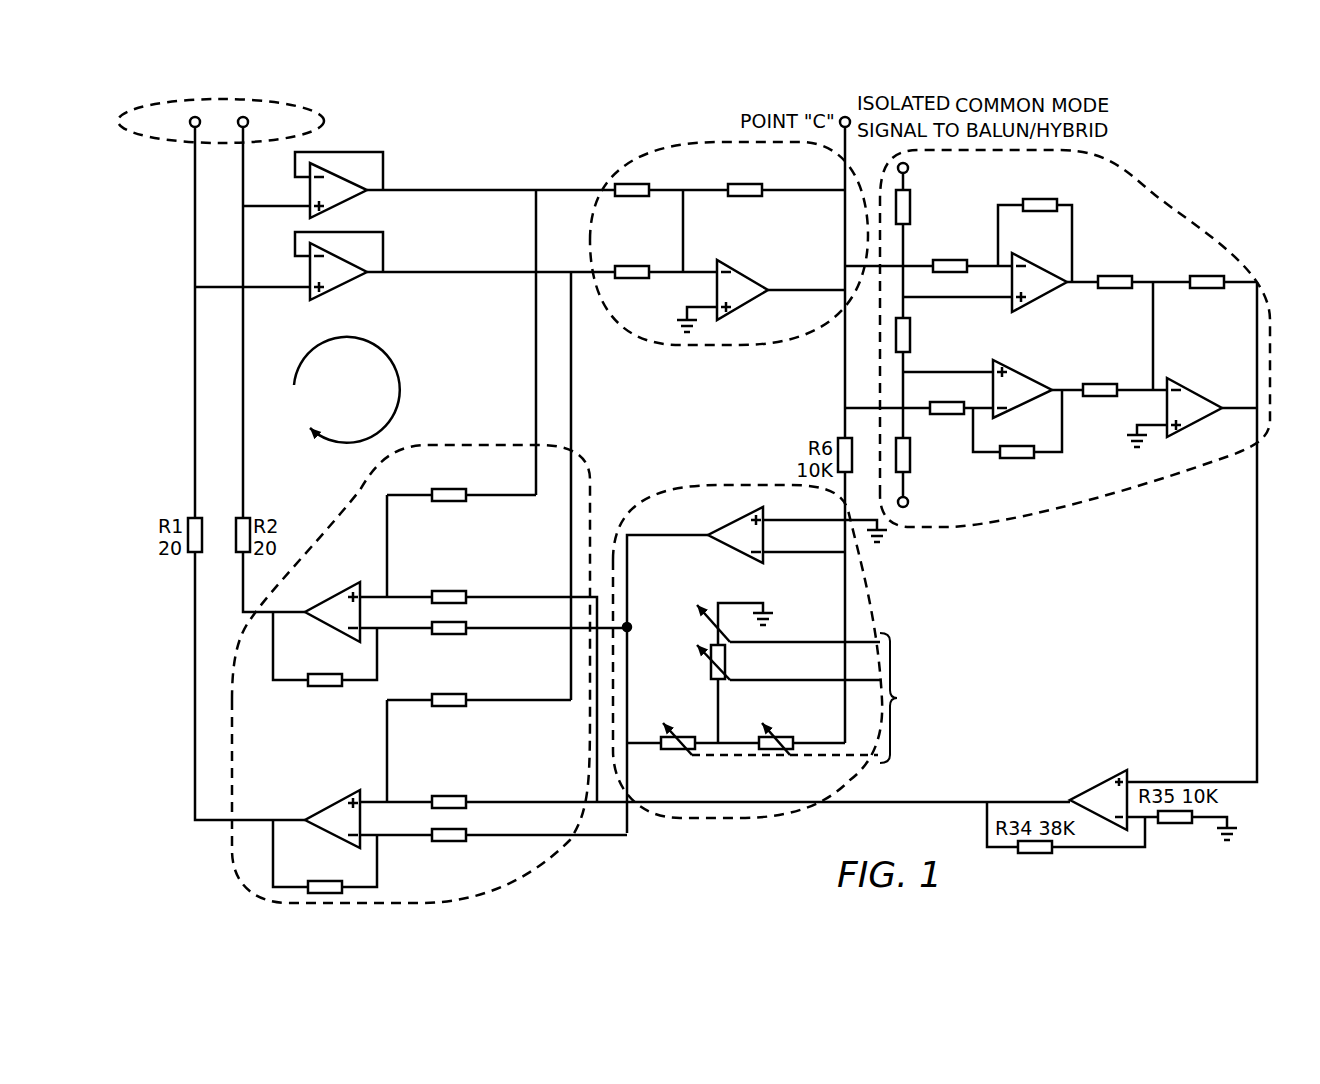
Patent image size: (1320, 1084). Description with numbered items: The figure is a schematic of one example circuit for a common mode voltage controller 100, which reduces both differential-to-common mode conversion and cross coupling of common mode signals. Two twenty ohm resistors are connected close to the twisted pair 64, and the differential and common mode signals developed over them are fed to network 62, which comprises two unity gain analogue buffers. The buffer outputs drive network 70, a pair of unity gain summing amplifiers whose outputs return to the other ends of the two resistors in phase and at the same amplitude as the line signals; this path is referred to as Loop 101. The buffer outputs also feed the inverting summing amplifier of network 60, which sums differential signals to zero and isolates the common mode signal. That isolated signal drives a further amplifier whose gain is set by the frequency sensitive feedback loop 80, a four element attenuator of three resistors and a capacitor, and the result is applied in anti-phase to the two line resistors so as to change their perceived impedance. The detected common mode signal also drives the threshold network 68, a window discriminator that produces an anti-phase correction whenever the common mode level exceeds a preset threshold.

The network 60 is at (608, 160).
The network 62 is at (372, 203).
The twisted pair 64 is at (332, 122).
The threshold network 68 is at (1155, 190).
The network 70 is at (235, 850).
The feedback loop 80 is at (872, 607).
The common mode voltage controller 100 is at (720, 840).
The Loop 101 is at (347, 390).